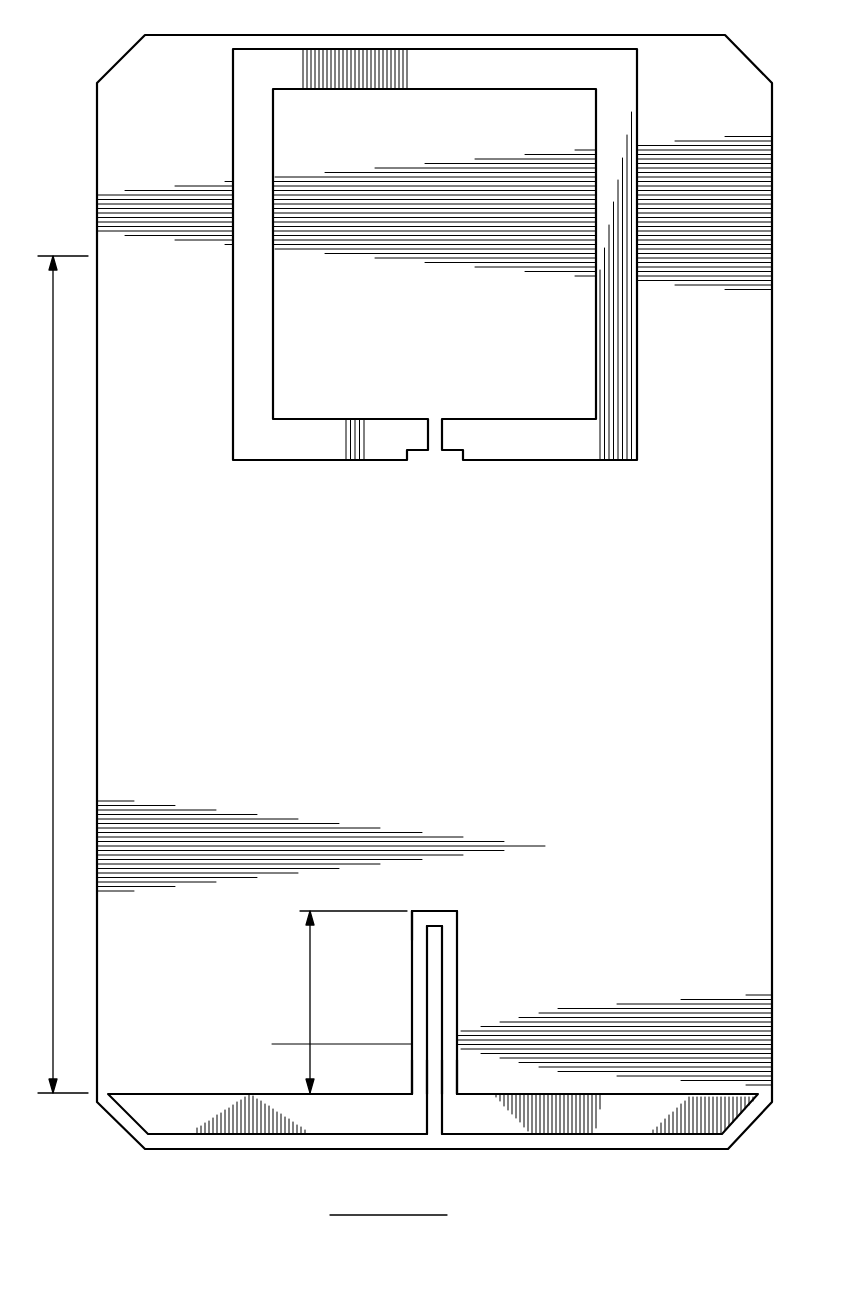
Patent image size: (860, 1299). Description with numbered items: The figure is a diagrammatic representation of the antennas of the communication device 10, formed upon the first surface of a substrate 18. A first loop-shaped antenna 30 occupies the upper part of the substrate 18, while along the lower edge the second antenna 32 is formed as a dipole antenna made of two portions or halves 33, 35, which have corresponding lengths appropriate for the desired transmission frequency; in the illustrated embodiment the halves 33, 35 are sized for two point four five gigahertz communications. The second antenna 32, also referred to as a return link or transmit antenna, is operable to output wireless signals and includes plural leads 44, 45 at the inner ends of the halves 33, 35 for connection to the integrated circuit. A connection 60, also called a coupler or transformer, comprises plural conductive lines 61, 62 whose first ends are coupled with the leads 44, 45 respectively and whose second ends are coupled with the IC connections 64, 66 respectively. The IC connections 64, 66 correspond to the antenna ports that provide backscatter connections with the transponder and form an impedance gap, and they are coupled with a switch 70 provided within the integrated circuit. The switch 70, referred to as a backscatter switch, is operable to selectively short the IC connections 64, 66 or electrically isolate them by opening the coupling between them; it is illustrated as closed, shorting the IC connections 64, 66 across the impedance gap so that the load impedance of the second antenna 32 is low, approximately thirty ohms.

The antenna device 10 is at (60, 106).
The substrate 18 is at (711, 923).
The loop radiating element 30 is at (228, 320).
The second antenna 32 is at (433, 1118).
The half 33 is at (172, 1097).
The half 35 is at (608, 1115).
The lead 44 is at (412, 1082).
The lead 45 is at (448, 1082).
The connection 60 is at (471, 999).
The conductive line 61 is at (412, 1014).
The conductive line 62 is at (458, 1010).
The IC connection 64 is at (412, 919).
The IC connection 66 is at (450, 918).
The switch 70 is at (446, 886).